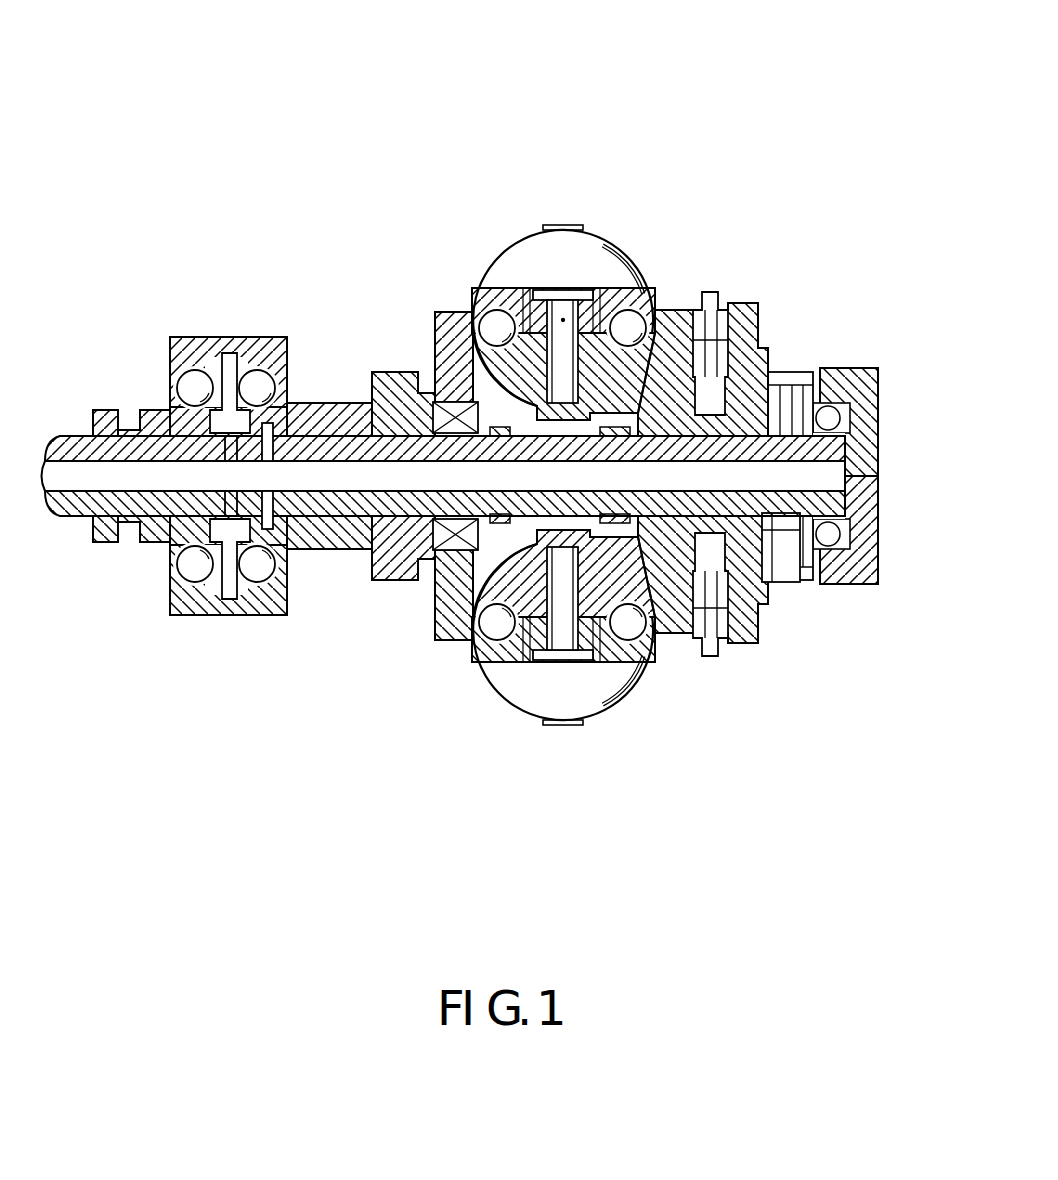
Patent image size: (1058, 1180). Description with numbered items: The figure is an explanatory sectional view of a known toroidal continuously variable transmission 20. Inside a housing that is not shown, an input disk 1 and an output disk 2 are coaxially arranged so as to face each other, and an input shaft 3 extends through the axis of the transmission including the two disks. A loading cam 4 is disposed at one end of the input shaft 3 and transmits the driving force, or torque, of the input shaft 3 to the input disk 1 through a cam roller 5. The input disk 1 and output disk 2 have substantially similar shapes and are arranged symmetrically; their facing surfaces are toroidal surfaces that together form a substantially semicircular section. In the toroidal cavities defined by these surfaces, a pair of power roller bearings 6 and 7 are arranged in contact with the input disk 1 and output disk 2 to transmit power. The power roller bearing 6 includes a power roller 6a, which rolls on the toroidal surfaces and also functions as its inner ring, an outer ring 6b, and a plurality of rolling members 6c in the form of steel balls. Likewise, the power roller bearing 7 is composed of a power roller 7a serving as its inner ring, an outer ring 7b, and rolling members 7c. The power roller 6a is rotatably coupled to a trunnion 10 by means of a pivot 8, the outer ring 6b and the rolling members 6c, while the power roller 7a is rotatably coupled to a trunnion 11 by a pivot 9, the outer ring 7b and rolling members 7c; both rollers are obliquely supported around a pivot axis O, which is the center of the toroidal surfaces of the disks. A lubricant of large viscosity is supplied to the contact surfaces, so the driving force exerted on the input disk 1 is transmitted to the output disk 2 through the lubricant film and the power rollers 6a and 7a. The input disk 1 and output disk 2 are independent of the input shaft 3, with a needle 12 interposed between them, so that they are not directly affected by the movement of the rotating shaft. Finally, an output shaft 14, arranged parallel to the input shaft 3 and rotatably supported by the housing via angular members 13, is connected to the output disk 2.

The input disk 1 is at (682, 327).
The output disk 2 is at (440, 310).
The input shaft 3 is at (150, 411).
The loading cam 4 is at (770, 615).
The cam roller 5 is at (710, 645).
The power roller bearing 6 is at (458, 258).
The power roller 6a is at (528, 356).
The outer ring 6b is at (630, 320).
The rolling members 6c is at (660, 293).
The power roller bearing 7 is at (538, 818).
The power roller 7a is at (635, 670).
The outer ring 7b is at (492, 660).
The rolling members 7c is at (473, 653).
The pivot 8 is at (553, 300).
The pivot 9 is at (548, 650).
The trunnion 10 is at (620, 250).
The trunnion 11 is at (588, 700).
The needle 12 is at (583, 548).
The angular members 13 is at (250, 373).
The output shaft 14 is at (372, 372).
The toroidal continuously variable transmission 20 is at (665, 82).
The pivot axis O is at (585, 300).